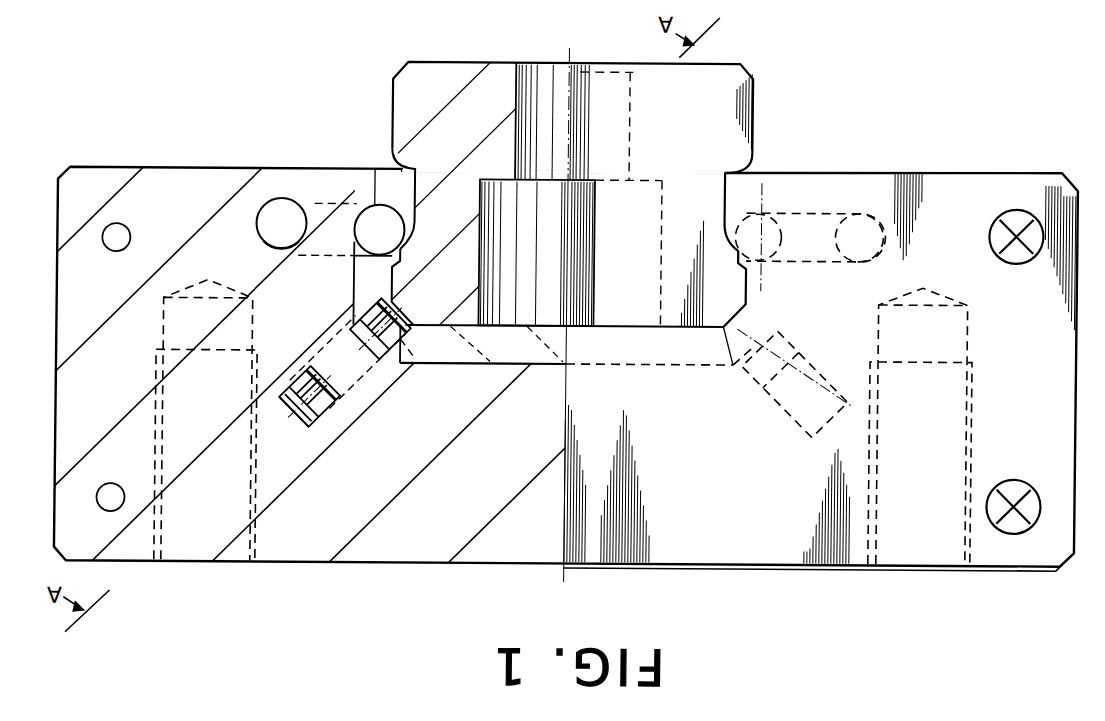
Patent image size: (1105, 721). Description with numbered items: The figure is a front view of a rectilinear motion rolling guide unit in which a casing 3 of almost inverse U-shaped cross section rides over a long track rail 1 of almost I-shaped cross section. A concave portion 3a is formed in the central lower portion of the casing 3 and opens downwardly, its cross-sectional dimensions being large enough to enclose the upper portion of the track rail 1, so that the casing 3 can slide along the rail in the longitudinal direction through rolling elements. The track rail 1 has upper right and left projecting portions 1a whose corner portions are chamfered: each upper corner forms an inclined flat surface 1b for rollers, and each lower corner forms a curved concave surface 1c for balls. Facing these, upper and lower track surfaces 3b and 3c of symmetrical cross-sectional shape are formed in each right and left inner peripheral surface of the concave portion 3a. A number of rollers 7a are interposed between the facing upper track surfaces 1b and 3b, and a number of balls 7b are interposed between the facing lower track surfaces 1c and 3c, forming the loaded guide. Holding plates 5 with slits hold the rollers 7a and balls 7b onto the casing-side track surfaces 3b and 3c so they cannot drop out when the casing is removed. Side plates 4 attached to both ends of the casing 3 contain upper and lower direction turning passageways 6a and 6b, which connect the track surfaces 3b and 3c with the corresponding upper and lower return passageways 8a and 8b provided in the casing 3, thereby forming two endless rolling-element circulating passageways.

The track rail 1 is at (707, 88).
The upper right and left projecting portions 1a is at (735, 282).
The inclined flat surface 1b is at (403, 306).
The curved concave surface 1c is at (408, 238).
The casing 3 is at (478, 565).
The concave portion 3a is at (482, 366).
The upper track surface on the casing side 3b is at (375, 375).
The lower track surface on the casing side 3c is at (350, 204).
The side plate 4 is at (960, 205).
The holding plate 5 is at (383, 168).
The upper direction turning passageway 6a is at (360, 372).
The lower direction turning passageway 6b is at (305, 250).
The roller 7a is at (303, 372).
The ball 7b is at (365, 258).
The upper return passageway 8a is at (290, 422).
The lower return passageway 8b is at (255, 224).